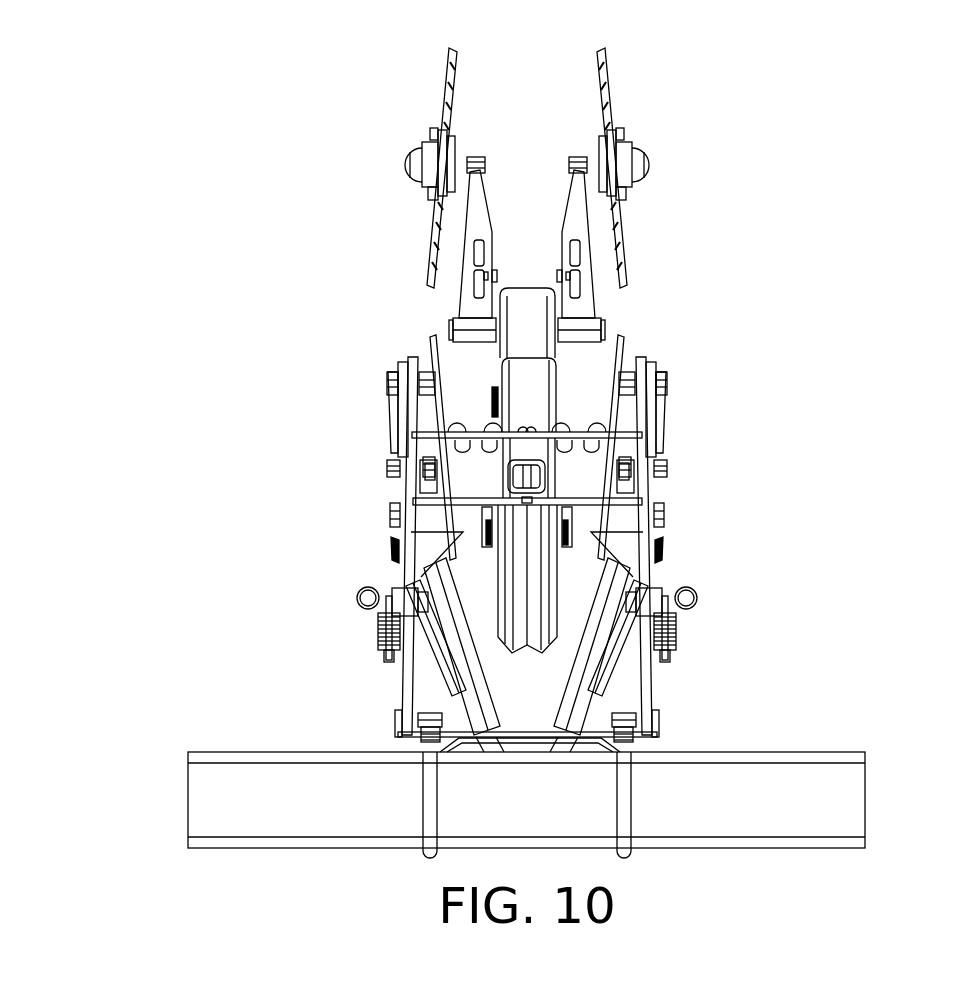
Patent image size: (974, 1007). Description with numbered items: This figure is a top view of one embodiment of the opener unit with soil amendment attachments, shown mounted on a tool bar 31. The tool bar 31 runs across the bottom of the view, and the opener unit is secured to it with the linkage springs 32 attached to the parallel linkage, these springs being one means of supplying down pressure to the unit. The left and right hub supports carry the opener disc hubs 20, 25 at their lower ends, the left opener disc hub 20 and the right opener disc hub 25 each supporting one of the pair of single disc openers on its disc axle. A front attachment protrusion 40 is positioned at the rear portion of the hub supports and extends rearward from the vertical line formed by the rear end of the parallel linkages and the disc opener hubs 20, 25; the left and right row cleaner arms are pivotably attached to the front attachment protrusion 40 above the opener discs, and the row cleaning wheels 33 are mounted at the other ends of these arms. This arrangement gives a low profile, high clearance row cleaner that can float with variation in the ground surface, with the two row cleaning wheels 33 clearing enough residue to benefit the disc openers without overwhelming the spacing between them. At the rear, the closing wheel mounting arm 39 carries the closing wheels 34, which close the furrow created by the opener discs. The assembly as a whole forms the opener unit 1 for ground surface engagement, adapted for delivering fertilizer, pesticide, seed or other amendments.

The row unit frame 1 is at (655, 527).
The left opener disc hub 20 is at (387, 468).
The right opener disc hub 25 is at (667, 466).
The tool bar 31 is at (865, 780).
The linkage spring 32 is at (380, 628).
The row cleaning wheel 33 is at (598, 704).
The closing wheel 34 is at (449, 72).
The closing wheel mounting arm 39 is at (527, 288).
The front attachment protrusion 40 is at (413, 356).